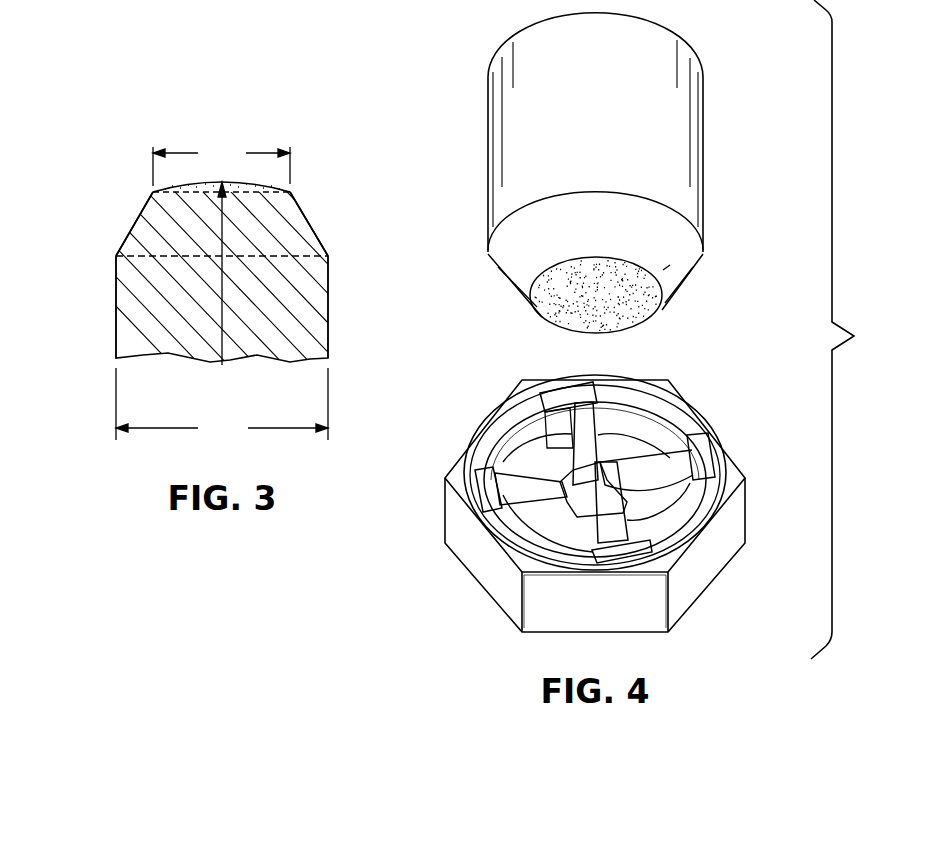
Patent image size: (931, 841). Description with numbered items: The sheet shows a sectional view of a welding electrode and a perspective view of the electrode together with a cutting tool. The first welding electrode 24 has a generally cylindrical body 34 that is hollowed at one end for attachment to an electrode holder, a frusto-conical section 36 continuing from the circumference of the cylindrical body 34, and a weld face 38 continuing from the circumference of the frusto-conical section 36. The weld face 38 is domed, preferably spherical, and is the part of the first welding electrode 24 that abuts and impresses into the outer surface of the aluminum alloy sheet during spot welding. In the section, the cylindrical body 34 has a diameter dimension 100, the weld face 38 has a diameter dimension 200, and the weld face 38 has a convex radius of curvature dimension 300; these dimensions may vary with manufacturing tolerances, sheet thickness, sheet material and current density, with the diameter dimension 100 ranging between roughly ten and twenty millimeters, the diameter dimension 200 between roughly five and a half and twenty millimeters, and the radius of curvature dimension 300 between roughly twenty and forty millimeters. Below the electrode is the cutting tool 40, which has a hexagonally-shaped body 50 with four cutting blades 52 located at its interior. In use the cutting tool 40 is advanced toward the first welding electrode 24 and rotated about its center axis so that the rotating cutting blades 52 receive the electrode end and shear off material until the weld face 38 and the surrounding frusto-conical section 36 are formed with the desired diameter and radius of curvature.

In FIG. 3, the first welding electrode 24 is at (340, 305).
In FIG. 4, the first welding electrode 24 is at (718, 138).
In FIG. 3, the cylindrical body 34 is at (117, 304).
In FIG. 3, the frusto-conical section 36 is at (137, 229).
In FIG. 3, the weld face 38 is at (201, 181).
In FIG. 4, the weld face 38 is at (634, 308).
In FIG. 4, the cutting tool 40 is at (583, 486).
In FIG. 4, the hexagonally-shaped body 50 is at (493, 566).
In FIG. 4, the cutting blades 52 is at (577, 428).
In FIG. 3, the diameter dimension 100 is at (222, 404).
In FIG. 3, the diameter dimension 200 is at (221, 164).
In FIG. 3, the radius of curvature dimension 300 is at (222, 291).